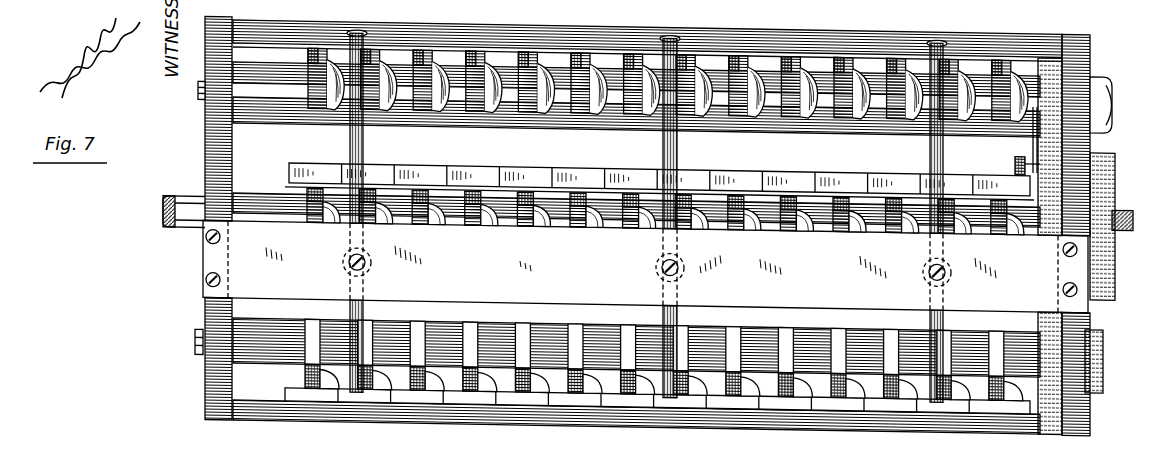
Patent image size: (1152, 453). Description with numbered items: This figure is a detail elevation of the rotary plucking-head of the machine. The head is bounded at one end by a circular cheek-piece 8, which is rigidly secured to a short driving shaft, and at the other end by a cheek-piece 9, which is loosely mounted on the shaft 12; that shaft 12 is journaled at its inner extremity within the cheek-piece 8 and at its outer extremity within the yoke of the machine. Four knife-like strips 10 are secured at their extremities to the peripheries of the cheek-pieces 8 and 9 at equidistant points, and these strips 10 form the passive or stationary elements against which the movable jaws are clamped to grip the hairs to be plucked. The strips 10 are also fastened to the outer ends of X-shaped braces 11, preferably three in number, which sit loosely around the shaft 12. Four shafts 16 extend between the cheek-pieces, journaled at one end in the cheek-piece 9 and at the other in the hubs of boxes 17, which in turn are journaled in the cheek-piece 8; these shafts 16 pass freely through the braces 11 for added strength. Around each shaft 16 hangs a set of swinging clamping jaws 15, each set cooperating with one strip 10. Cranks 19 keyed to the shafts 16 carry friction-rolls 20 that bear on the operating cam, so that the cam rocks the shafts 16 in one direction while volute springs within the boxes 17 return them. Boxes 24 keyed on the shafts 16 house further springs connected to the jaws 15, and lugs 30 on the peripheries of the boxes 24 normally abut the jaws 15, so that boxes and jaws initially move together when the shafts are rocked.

The circular cheek-piece 8 is at (1076, 86).
The cheek-piece 9 is at (219, 164).
The knife-like strips 10 is at (272, 426).
The X-shaped braces 11 is at (352, 146).
The shaft 12 is at (197, 224).
The clamping jaws 15 is at (320, 54).
The shafts 16 is at (200, 90).
The boxes 17 is at (1052, 81).
The cranks 19 is at (1030, 120).
The friction-rolls 20 is at (1040, 150).
The boxes 24 is at (344, 113).
The lugs 30 is at (327, 72).